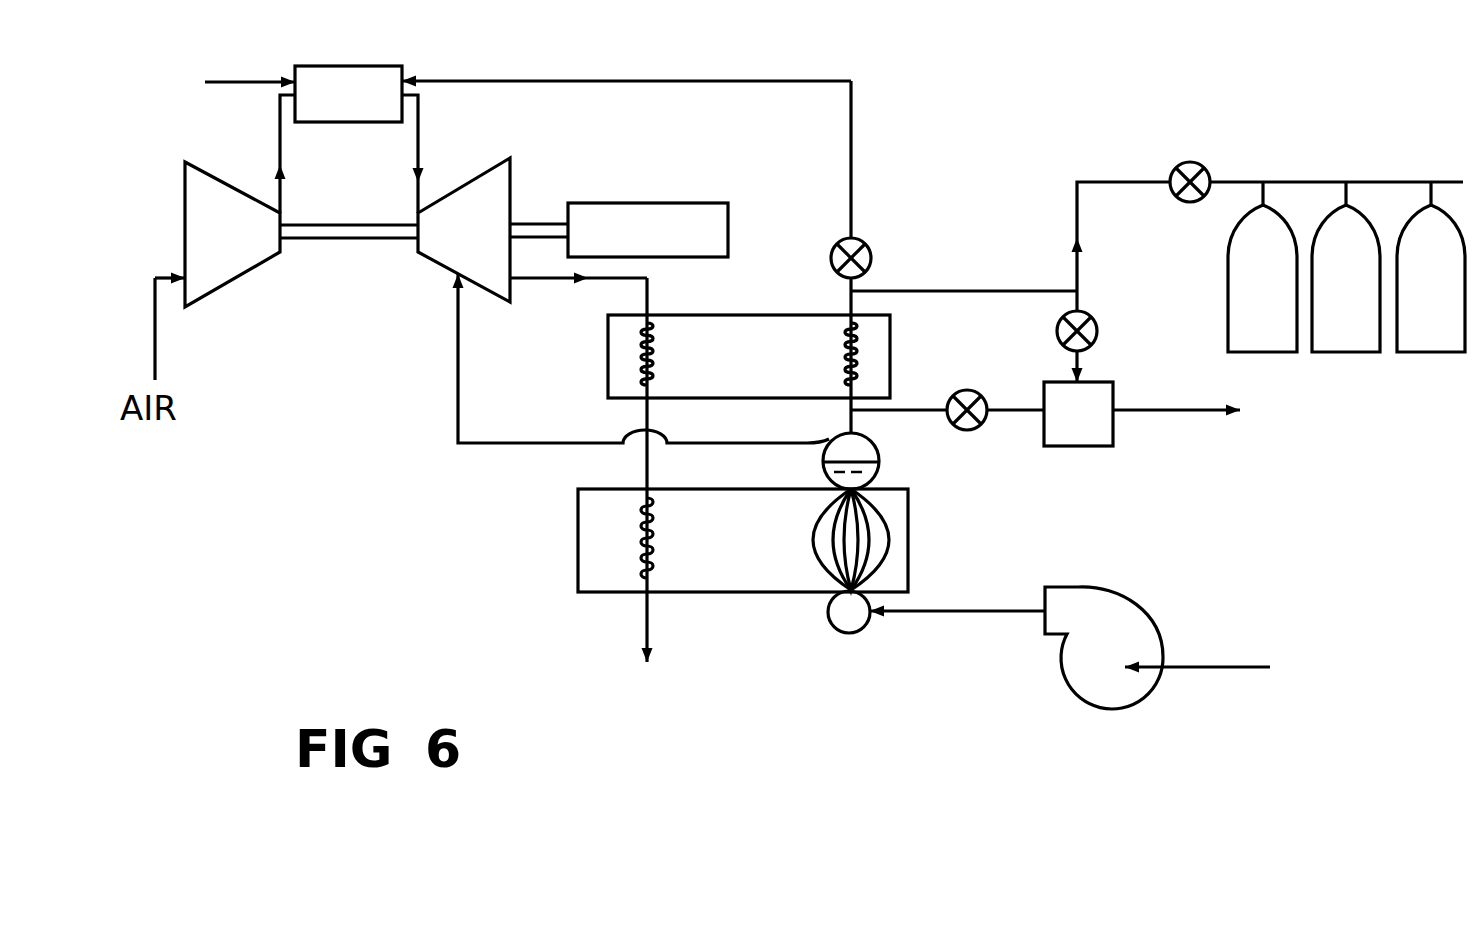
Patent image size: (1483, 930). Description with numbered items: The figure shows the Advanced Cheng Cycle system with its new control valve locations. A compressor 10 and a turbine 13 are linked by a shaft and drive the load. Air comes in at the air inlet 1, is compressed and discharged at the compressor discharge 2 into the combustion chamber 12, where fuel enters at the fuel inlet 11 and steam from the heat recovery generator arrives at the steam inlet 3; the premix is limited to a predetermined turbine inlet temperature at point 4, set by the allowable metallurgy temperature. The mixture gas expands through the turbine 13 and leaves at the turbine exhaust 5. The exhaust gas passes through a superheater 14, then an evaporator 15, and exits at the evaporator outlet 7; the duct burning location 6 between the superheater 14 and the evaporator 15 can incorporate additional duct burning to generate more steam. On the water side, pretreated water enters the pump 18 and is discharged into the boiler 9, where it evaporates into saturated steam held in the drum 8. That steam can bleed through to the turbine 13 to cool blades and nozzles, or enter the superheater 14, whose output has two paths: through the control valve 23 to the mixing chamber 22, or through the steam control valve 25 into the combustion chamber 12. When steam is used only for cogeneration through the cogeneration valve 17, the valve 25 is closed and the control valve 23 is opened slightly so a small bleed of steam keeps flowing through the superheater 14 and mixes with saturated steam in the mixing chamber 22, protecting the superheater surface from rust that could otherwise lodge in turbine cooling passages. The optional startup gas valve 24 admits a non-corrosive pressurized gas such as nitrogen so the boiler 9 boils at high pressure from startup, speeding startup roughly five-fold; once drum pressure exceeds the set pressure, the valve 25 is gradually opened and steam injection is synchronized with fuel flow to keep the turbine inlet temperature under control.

The air inlet 1 is at (159, 314).
The compressor discharge 2 is at (280, 140).
The steam inlet to combustion chamber 3 is at (626, 68).
The turbine inlet temperature point 4 is at (425, 154).
The turbine exhaust 5 is at (619, 220).
The duct burning location 6 is at (642, 445).
The evaporator outlet 7 is at (662, 631).
The drum 8 is at (851, 406).
The boiler 9 is at (936, 624).
The compressor 10 is at (233, 280).
The fuel inlet 11 is at (203, 69).
The combustion chamber 12 is at (378, 66).
The turbine 13 is at (453, 271).
The superheater 14 is at (608, 351).
The evaporator 15 is at (717, 540).
The cogeneration valve 17 is at (956, 430).
The pump 18 is at (1157, 669).
The mixing chamber 22 is at (1078, 447).
The control valve 23 is at (1100, 336).
The startup gas valve 24 is at (1268, 201).
The steam control valve 25 is at (877, 249).